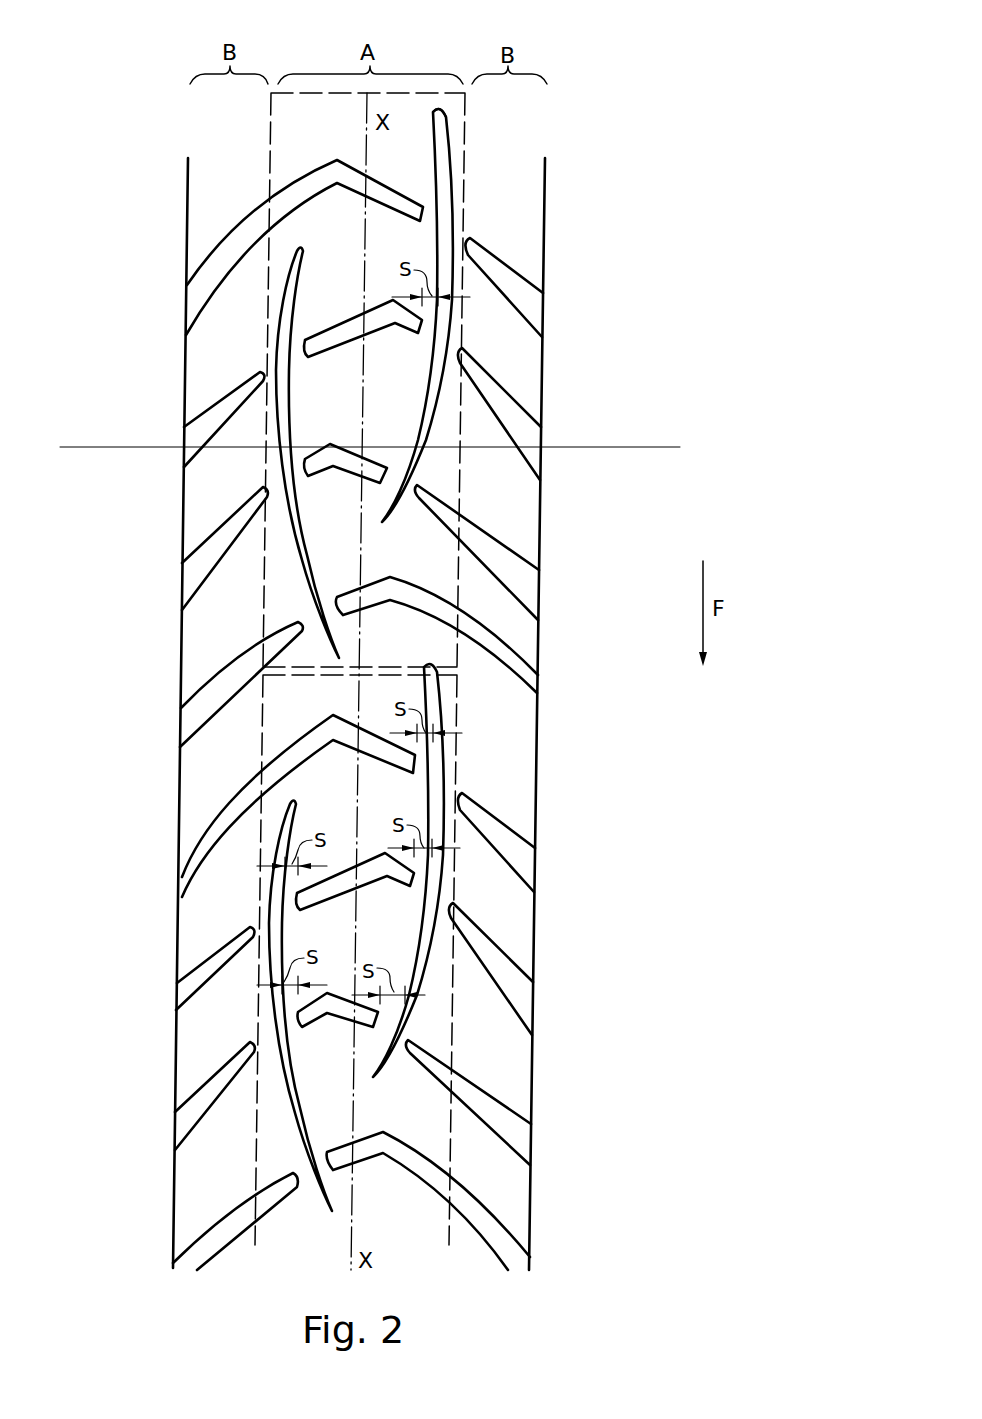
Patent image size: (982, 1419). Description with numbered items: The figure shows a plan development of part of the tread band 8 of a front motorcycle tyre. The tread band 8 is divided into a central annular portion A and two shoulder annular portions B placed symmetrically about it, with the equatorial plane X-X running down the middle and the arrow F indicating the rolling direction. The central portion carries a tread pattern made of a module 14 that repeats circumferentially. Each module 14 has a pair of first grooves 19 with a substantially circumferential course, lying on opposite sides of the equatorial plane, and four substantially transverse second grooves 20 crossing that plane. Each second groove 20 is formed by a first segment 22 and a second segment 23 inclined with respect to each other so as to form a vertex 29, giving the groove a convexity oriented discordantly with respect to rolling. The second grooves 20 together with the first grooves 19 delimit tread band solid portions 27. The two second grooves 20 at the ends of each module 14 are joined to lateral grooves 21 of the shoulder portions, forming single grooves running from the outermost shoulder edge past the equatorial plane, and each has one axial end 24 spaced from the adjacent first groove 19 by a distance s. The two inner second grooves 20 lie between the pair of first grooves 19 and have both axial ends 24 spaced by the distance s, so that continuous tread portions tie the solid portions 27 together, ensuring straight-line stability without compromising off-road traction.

The tread band 8 is at (568, 505).
The module 14 is at (407, 93).
The first grooves 19 is at (305, 342).
The second grooves 20 is at (315, 184).
The lateral grooves 21 is at (207, 277).
The first segment 22 is at (298, 272).
The second segment 23 is at (440, 302).
The axial end 24 is at (518, 234).
The tread band solid portions 27 is at (339, 390).
The vertex 29 is at (427, 480).